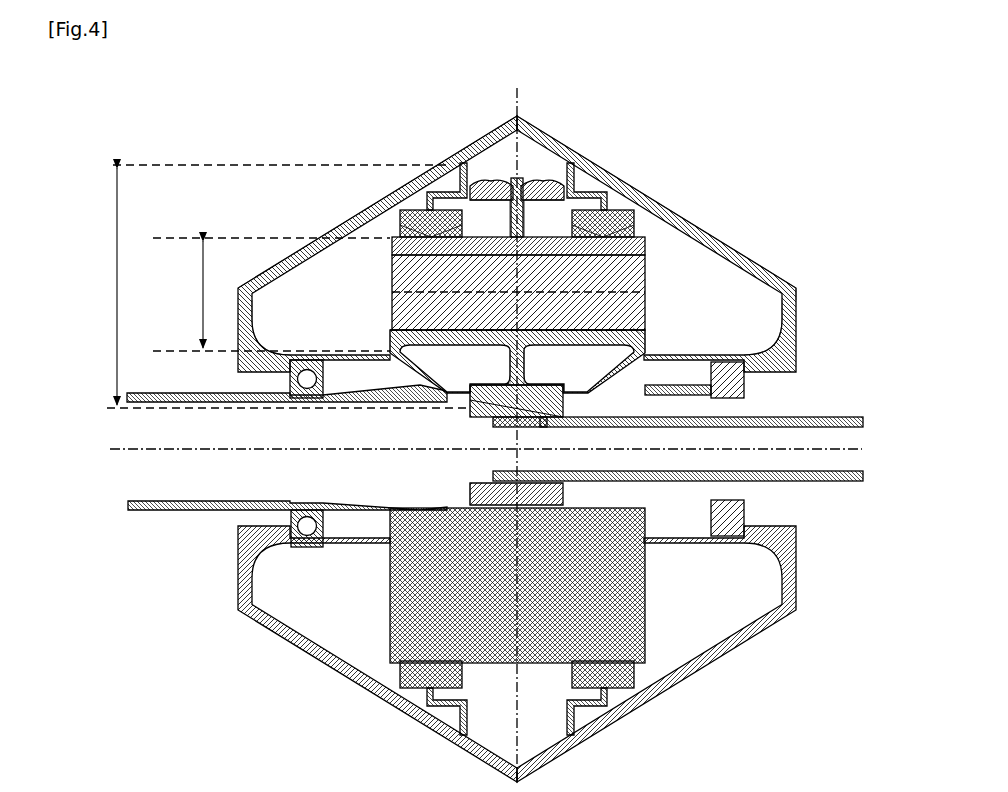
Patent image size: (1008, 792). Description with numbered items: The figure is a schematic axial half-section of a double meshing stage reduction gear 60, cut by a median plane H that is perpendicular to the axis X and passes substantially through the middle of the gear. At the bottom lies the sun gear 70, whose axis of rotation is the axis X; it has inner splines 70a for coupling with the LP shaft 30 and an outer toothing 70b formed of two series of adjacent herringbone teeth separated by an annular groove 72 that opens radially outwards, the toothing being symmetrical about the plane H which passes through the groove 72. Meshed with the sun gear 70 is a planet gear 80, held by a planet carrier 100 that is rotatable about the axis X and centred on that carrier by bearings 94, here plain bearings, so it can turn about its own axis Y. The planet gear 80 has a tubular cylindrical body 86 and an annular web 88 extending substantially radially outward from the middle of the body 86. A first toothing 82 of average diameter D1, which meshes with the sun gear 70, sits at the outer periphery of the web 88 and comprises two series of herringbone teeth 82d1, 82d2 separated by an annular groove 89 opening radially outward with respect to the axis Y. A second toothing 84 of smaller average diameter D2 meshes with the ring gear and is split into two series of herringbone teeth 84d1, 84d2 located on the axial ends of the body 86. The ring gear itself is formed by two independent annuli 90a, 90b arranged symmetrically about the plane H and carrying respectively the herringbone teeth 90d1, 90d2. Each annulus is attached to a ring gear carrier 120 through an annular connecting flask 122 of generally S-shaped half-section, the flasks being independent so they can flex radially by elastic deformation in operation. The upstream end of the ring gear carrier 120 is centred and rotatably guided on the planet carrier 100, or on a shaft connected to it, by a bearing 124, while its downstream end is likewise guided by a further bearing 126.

The LP shaft 30 is at (836, 417).
The reduction gear 60 is at (806, 132).
The sun gear 70 is at (476, 395).
The inner splines 70a is at (546, 418).
The outer toothing 70b is at (565, 499).
The annular groove 72 is at (494, 421).
The planet gear 80 is at (650, 333).
The first toothing 82 is at (534, 385).
The herringbone teeth 82d1 is at (480, 178).
The herringbone teeth 82d2 is at (545, 187).
The second toothing 84 is at (690, 337).
The herringbone teeth 84d1 is at (391, 318).
The herringbone teeth 84d2 is at (692, 360).
The cylindrical body 86 is at (391, 263).
The annular web 88 is at (512, 372).
The annular groove 89 is at (522, 180).
The annulus 90a is at (443, 167).
The annulus 90b is at (640, 207).
The herringbone teeth 90d1 is at (380, 240).
The herringbone teeth 90d2 is at (713, 258).
The bearings 94 is at (391, 298).
The planet carrier 100 is at (652, 605).
The ring gear carrier 120 is at (728, 222).
The annular connecting flasks 122 is at (455, 187).
The bearing 124 is at (291, 404).
The further bearing 126 is at (742, 375).
The median plane H is at (526, 104).
The axis of rotation X is at (130, 452).
The planet gear axis Y is at (633, 330).
The average diameter D1 is at (112, 283).
The average diameter D2 is at (200, 292).